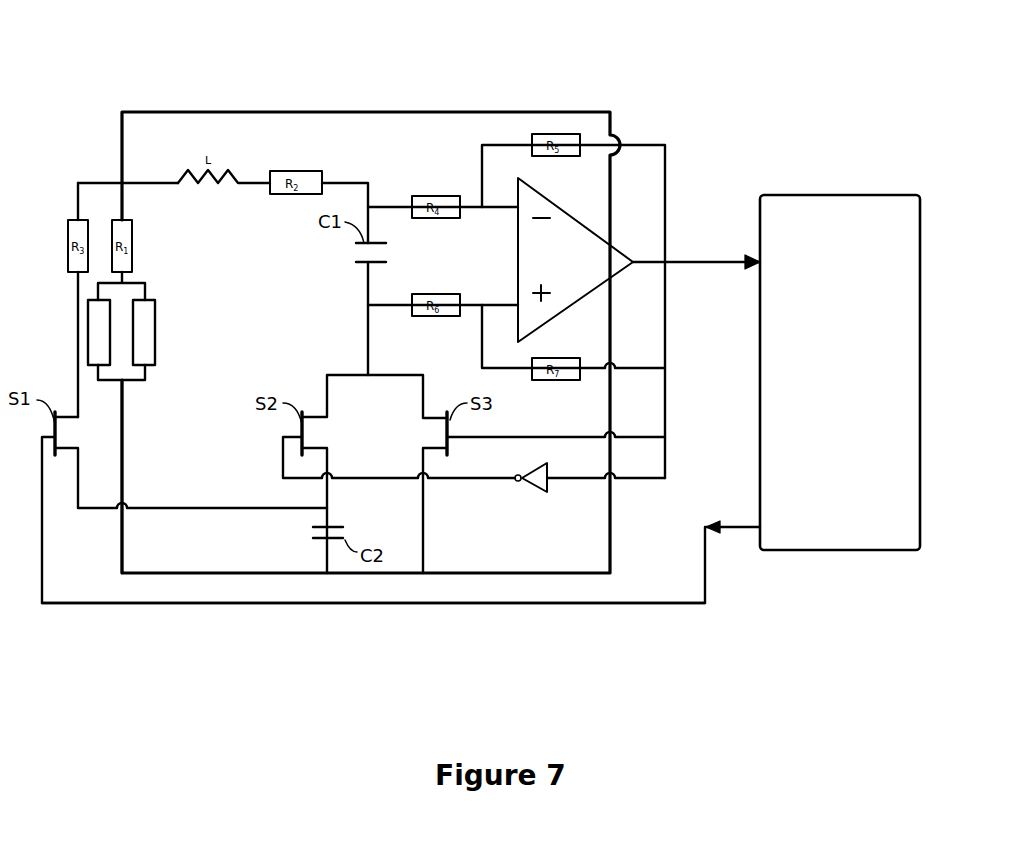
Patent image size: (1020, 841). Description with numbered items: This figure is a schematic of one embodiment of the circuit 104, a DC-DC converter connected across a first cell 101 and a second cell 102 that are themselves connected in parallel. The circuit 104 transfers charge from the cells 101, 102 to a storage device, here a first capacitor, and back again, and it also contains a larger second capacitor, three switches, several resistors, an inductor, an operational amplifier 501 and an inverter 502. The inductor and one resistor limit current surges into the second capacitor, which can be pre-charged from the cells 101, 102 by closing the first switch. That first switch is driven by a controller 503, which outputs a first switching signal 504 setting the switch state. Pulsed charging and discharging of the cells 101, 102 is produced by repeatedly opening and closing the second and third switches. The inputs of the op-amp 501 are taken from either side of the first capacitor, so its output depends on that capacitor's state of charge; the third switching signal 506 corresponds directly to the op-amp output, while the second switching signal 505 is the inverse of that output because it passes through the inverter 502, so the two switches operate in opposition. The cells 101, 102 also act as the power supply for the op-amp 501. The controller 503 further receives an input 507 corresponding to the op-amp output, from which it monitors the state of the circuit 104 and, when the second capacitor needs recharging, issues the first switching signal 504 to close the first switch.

The circuit 104 is at (176, 60).
The first cell 101 is at (88, 335).
The second cell 102 is at (155, 335).
The operational amplifier 501 is at (548, 192).
The inverter 502 is at (542, 490).
The controller 503 is at (840, 372).
The first switching signal 504 is at (373, 620).
The second switching signal 505 is at (472, 477).
The third switching signal 506 is at (552, 436).
The input 507 is at (696, 254).